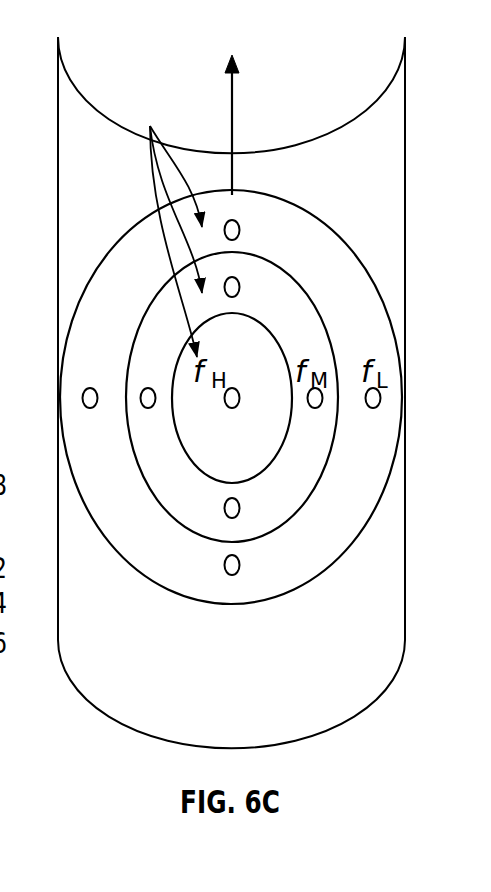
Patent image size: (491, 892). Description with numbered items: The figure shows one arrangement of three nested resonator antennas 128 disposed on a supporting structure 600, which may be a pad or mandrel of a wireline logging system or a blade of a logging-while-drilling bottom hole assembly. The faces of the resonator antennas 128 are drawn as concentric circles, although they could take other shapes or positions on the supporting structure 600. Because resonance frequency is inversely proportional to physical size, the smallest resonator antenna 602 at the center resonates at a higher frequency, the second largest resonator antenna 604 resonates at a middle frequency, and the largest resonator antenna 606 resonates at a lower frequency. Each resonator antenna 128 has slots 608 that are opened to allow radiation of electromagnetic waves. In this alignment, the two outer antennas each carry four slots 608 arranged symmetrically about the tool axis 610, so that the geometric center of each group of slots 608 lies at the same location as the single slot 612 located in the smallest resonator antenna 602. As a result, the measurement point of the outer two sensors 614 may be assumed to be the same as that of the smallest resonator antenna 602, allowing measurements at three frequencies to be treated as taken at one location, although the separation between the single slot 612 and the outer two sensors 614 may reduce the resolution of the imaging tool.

The supporting structure 600 is at (387, 127).
The smallest resonator antenna 602 is at (303, 563).
The second largest resonator antenna 604 is at (278, 503).
The largest resonator antenna 606 is at (262, 455).
The slot 608 is at (224, 396).
The tool axis 610 is at (234, 118).
The single slot 612 is at (238, 388).
The outer two sensors 614 is at (240, 232).
The resonator antenna 128 is at (166, 226).